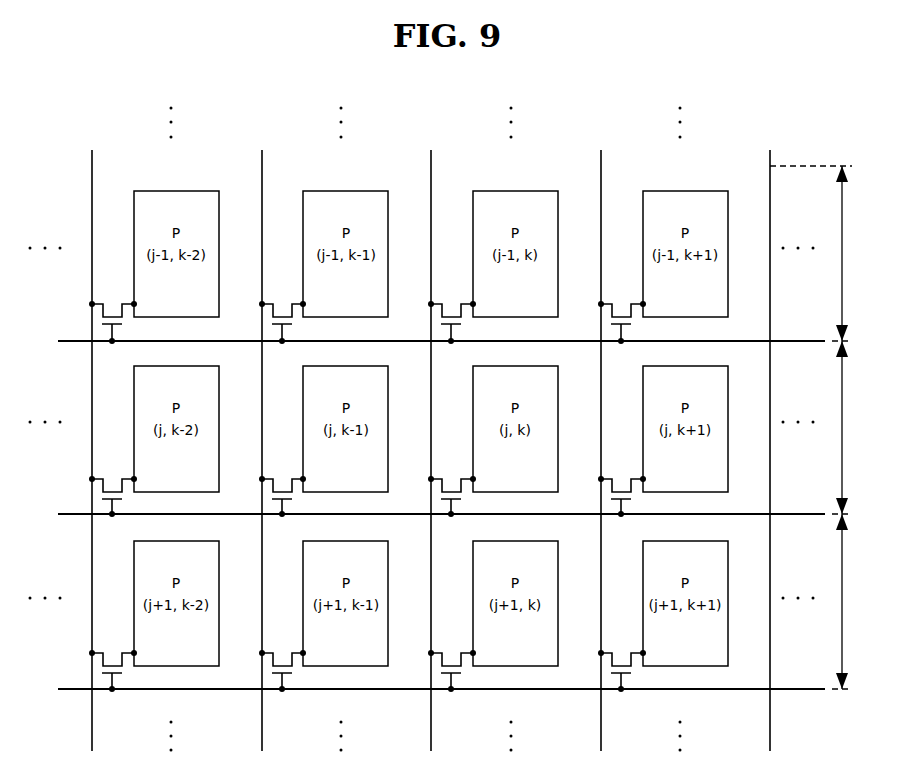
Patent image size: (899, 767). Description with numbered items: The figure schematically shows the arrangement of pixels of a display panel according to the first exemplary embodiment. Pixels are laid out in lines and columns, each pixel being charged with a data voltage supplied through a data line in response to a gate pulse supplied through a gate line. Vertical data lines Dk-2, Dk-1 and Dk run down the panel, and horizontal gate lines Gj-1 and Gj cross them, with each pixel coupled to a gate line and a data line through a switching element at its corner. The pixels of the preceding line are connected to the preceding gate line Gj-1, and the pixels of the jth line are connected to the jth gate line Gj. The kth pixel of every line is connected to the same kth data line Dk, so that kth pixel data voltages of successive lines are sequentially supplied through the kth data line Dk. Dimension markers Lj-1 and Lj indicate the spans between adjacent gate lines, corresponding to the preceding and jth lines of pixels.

The (k-2)th data line Dk-2 is at (90, 441).
The (k-1)th data line Dk-1 is at (260, 441).
The kth data line Dk is at (430, 441).
The (j-1)th gate line Gj-1 is at (423, 341).
The jth gate line Gj is at (423, 514).
The gate line period L(j-1) Lj-1 is at (854, 253).
The gate line period L(j) Lj is at (848, 427).